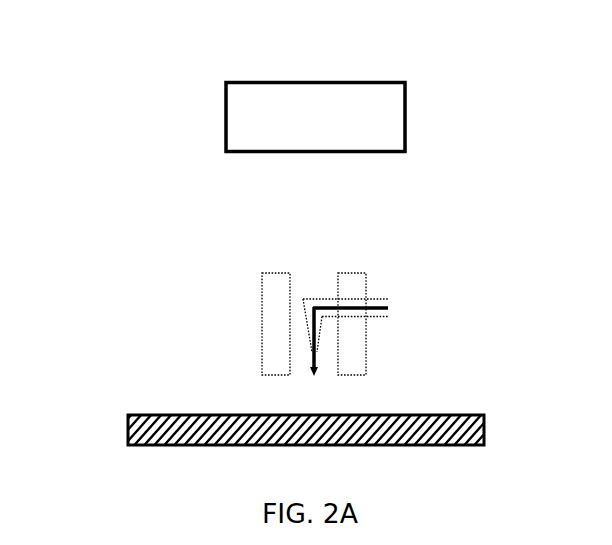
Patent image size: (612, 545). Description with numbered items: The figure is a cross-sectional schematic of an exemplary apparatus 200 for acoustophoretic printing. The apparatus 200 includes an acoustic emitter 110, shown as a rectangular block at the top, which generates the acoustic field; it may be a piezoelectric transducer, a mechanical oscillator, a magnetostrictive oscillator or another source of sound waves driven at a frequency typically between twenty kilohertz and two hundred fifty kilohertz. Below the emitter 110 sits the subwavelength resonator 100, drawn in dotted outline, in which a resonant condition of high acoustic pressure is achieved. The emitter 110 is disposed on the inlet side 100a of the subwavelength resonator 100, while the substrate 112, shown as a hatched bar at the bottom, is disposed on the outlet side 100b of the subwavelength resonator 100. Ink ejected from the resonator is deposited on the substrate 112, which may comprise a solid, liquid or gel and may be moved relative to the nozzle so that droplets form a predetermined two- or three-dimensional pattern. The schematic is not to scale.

The apparatus 200 is at (114, 105).
The acoustic emitter 110 is at (225, 128).
The subwavelength resonator 100 is at (399, 273).
The inlet side 100a is at (318, 272).
The outlet side 100b is at (327, 384).
The substrate 112 is at (215, 414).